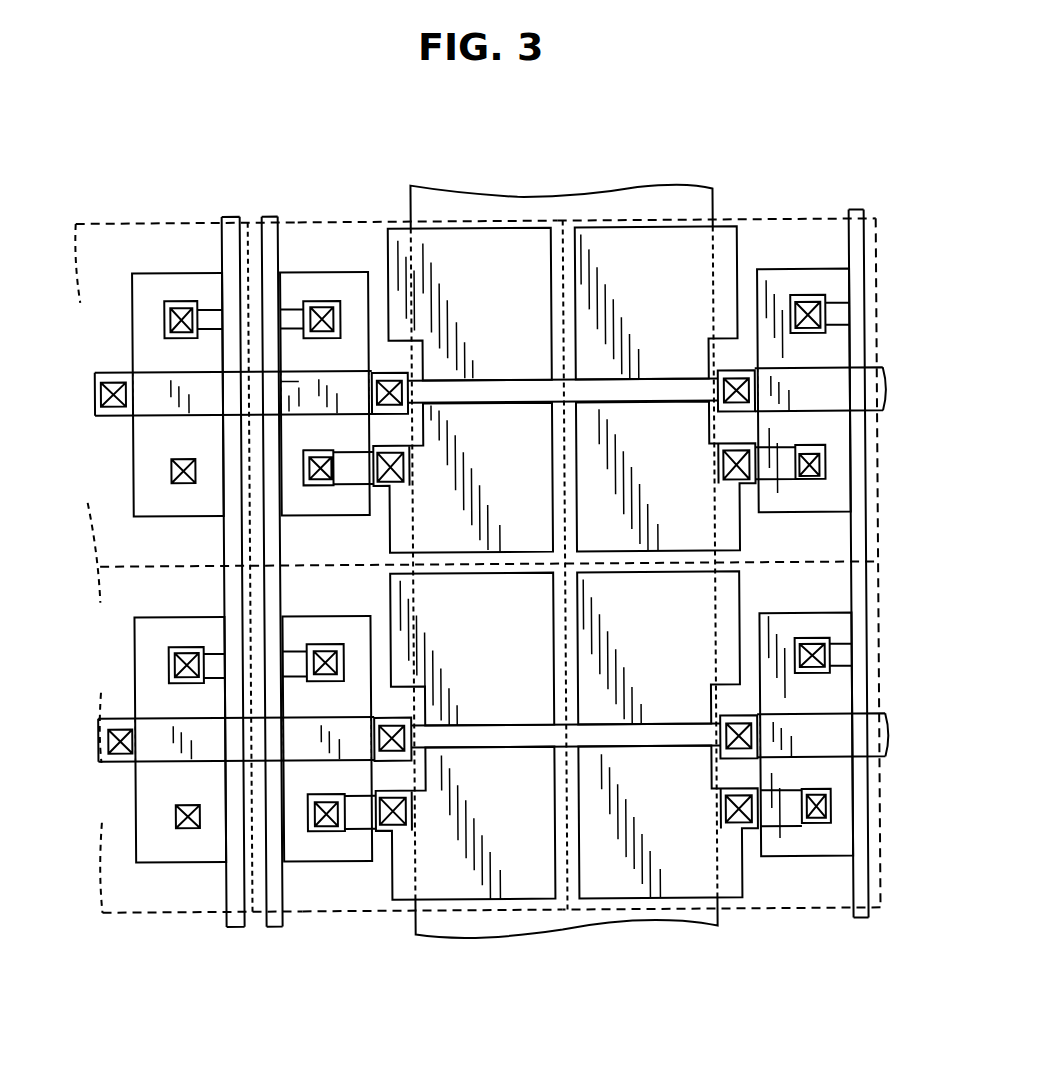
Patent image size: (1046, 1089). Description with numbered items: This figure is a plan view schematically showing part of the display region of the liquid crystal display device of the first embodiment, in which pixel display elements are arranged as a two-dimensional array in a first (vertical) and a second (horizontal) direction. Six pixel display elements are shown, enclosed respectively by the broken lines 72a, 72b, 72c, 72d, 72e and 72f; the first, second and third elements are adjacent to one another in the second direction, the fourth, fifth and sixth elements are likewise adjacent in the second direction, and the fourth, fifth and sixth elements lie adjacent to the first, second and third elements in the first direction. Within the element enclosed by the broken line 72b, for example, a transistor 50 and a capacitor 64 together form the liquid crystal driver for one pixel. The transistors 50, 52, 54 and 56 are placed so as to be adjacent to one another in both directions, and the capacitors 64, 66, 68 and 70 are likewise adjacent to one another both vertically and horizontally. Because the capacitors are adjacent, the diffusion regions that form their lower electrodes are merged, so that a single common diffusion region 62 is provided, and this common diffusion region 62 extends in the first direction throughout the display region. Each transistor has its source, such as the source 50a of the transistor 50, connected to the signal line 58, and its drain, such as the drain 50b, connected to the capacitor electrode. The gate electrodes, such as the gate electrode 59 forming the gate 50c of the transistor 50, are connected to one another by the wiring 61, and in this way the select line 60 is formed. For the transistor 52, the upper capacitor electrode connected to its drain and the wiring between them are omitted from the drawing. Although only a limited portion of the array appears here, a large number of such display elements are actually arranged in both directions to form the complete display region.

The transistor 50 is at (325, 360).
The source 50a is at (350, 305).
The drain 50b is at (293, 472).
The gate 50c is at (306, 388).
The transistor 52 is at (160, 270).
The transistor 54 is at (321, 862).
The transistor 56 is at (175, 614).
The signal line 58 is at (272, 927).
The gate electrode 59 is at (93, 398).
The select line 60 is at (108, 366).
The wiring 61 is at (531, 382).
The common diffusion region 62 is at (594, 206).
The capacitor 64 is at (483, 258).
The capacitor 66 is at (664, 258).
The capacitor 68 is at (488, 876).
The capacitor 70 is at (645, 876).
The broken line 72a is at (758, 221).
The broken line 72b is at (392, 221).
The broken line 72c is at (202, 221).
The broken line 72d is at (796, 910).
The broken line 72e is at (386, 910).
The broken line 72f is at (158, 910).